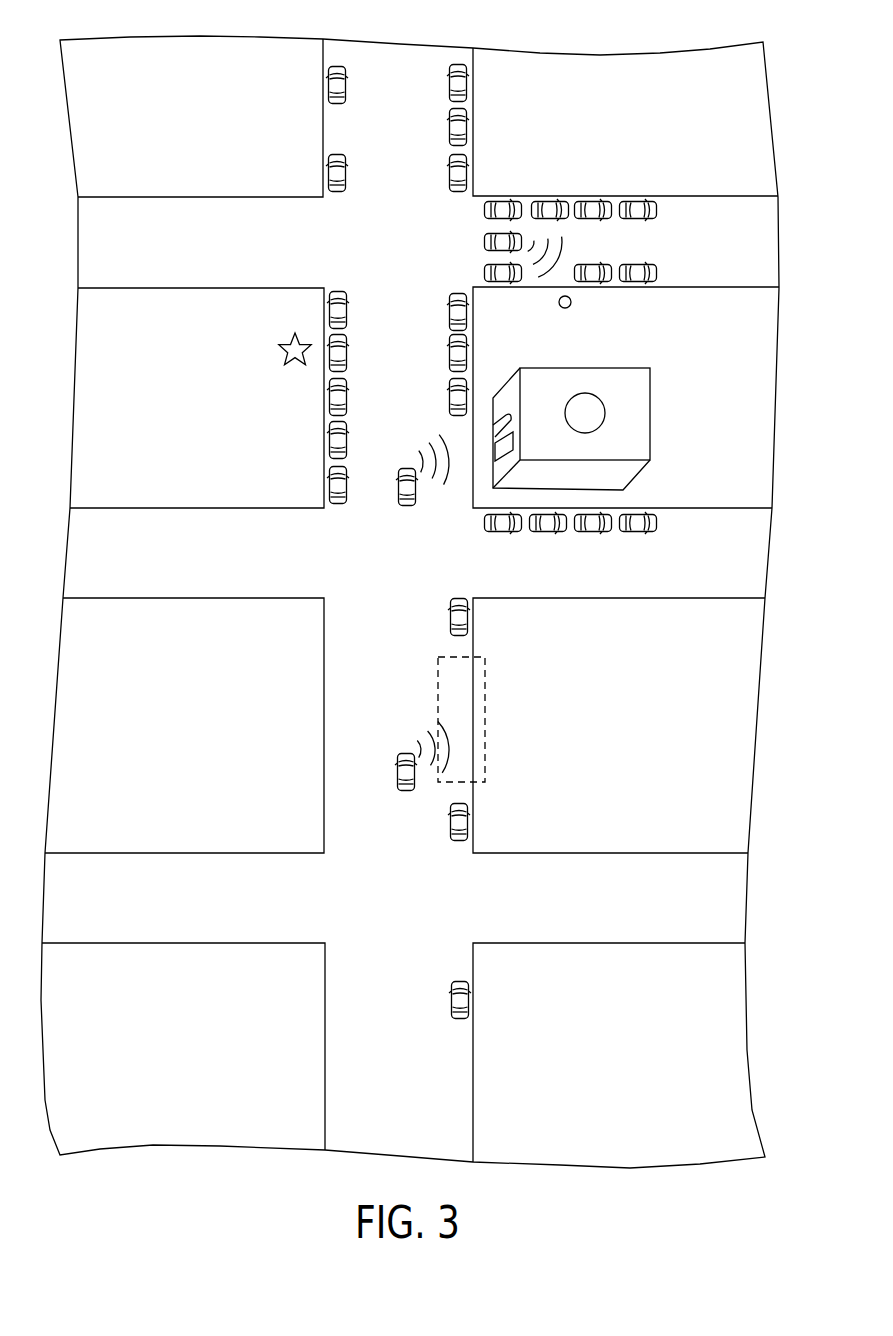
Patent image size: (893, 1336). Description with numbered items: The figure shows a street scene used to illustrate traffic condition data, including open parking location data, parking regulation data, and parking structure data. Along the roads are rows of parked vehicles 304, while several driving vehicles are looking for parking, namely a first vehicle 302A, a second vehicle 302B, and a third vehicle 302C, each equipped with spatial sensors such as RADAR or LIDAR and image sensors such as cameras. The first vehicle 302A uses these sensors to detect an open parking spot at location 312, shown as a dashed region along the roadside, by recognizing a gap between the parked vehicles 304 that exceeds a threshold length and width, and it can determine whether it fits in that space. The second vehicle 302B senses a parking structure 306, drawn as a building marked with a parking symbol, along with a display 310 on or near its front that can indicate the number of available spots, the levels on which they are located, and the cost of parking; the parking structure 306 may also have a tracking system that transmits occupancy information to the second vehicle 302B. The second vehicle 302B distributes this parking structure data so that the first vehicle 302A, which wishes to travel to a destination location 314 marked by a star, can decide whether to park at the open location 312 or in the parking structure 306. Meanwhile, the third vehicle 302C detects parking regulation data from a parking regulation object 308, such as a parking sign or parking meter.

The first vehicle 302A is at (405, 794).
The second vehicle 302B is at (405, 512).
The third vehicle 302C is at (485, 239).
The parked vehicles 304 is at (472, 173).
The parking structure 306 is at (650, 403).
The parking regulation object 308 is at (571, 305).
The display 310 is at (497, 465).
The open parking location 312 is at (485, 727).
The destination location 314 is at (283, 357).